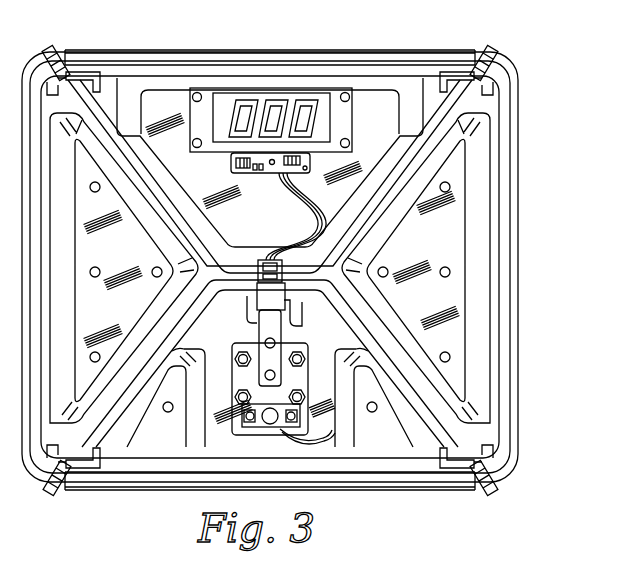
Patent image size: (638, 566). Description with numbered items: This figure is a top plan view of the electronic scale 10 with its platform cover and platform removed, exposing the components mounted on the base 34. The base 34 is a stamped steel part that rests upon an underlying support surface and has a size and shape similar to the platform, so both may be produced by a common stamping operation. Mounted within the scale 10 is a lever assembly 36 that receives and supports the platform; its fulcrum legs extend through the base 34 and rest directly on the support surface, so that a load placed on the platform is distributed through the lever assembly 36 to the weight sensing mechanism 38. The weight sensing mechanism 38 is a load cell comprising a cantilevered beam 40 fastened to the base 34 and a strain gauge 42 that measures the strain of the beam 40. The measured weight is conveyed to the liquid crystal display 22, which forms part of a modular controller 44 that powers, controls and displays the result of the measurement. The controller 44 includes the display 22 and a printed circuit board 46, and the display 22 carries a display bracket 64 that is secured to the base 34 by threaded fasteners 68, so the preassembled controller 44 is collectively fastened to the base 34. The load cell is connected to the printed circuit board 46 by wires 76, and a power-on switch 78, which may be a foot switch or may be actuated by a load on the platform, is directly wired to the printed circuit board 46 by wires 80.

The electronic scale 10 is at (548, 31).
The display 22 is at (263, 97).
The base 34 is at (406, 50).
The lever assembly 36 is at (408, 202).
The weight sensing mechanism 38 is at (290, 296).
The cantilevered beam 40 is at (292, 321).
The strain gauge 42 is at (290, 272).
The modular controller 44 is at (193, 88).
The printed circuit board 46 is at (352, 166).
The display bracket 64 is at (328, 90).
The threaded fasteners 68 is at (191, 96).
The wires 76 is at (300, 258).
The power-on switch 78 is at (265, 425).
The wires 80 is at (330, 433).